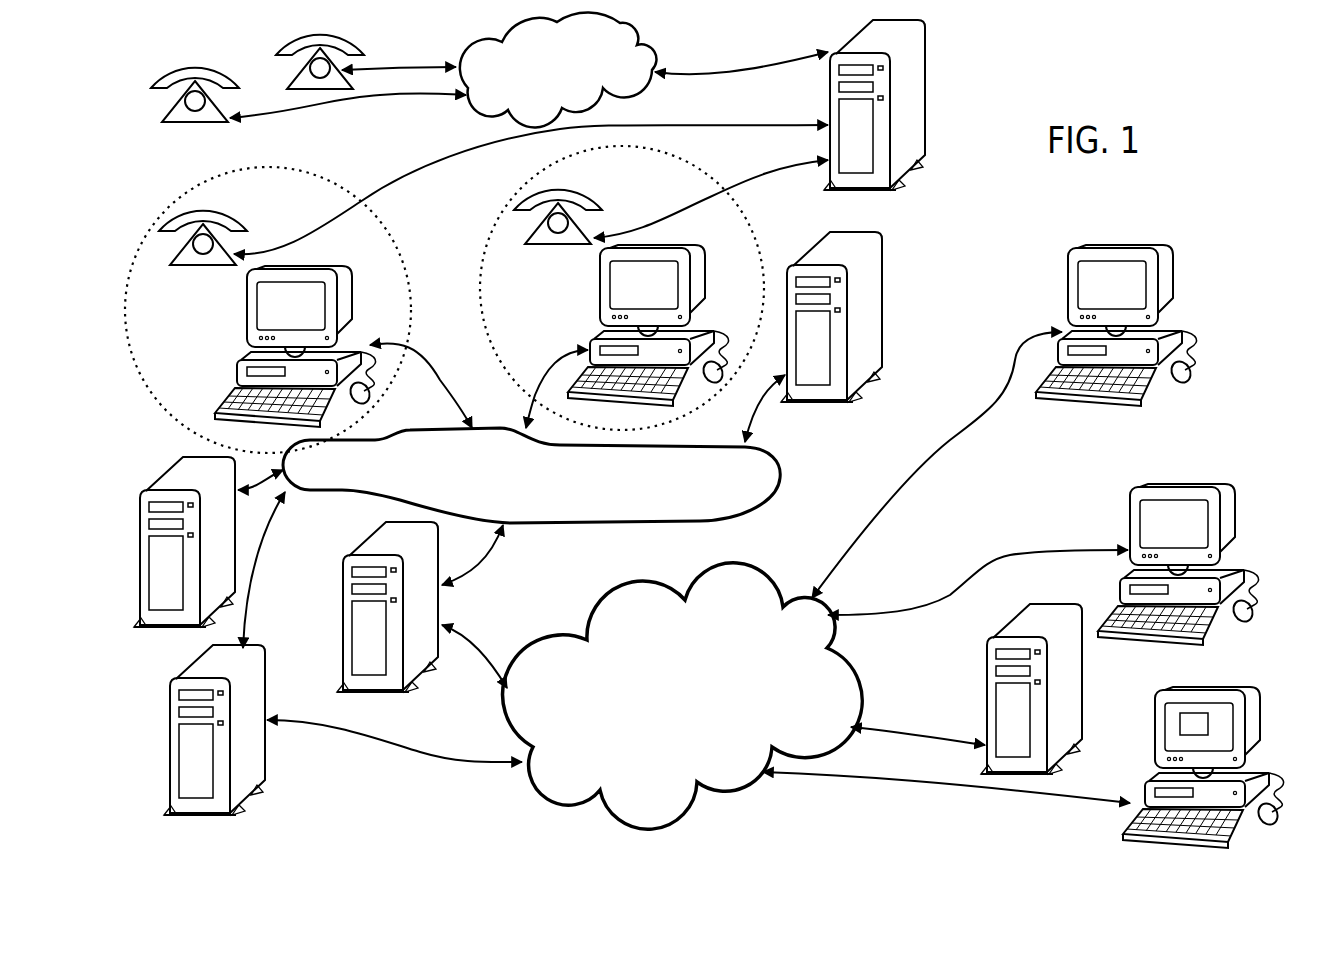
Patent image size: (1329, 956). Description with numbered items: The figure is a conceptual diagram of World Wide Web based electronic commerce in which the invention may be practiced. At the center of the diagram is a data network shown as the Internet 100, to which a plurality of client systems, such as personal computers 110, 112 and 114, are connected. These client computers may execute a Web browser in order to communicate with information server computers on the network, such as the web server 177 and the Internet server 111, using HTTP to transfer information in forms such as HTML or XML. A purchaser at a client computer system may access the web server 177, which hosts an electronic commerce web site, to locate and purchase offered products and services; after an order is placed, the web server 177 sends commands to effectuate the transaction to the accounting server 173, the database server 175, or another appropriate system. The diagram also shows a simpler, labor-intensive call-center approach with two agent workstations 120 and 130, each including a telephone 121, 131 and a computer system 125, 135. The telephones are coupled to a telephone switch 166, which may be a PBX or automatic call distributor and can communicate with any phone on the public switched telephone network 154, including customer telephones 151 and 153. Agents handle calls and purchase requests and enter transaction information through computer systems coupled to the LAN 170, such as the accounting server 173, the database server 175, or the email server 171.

The Internet 100 is at (660, 725).
The personal computer 110 is at (1260, 683).
The Internet server 111 is at (985, 689).
The personal computer 112 is at (1236, 480).
The client computer 114 is at (1170, 240).
The agent workstation 120 is at (140, 336).
The telephone 121 is at (243, 215).
The computer system 125 is at (273, 320).
The agent workstation 130 is at (495, 315).
The telephone 131 is at (597, 195).
The computer system 135 is at (629, 300).
The customer telephone 151 is at (357, 41).
The customer telephone 153 is at (236, 73).
The public switched telephone network 154 is at (533, 88).
The telephone switch 166 is at (842, 149).
The LAN 170 is at (473, 490).
The email server 171 is at (362, 598).
The accounting server 173 is at (883, 309).
The database server 175 is at (153, 534).
The web server 177 is at (251, 730).